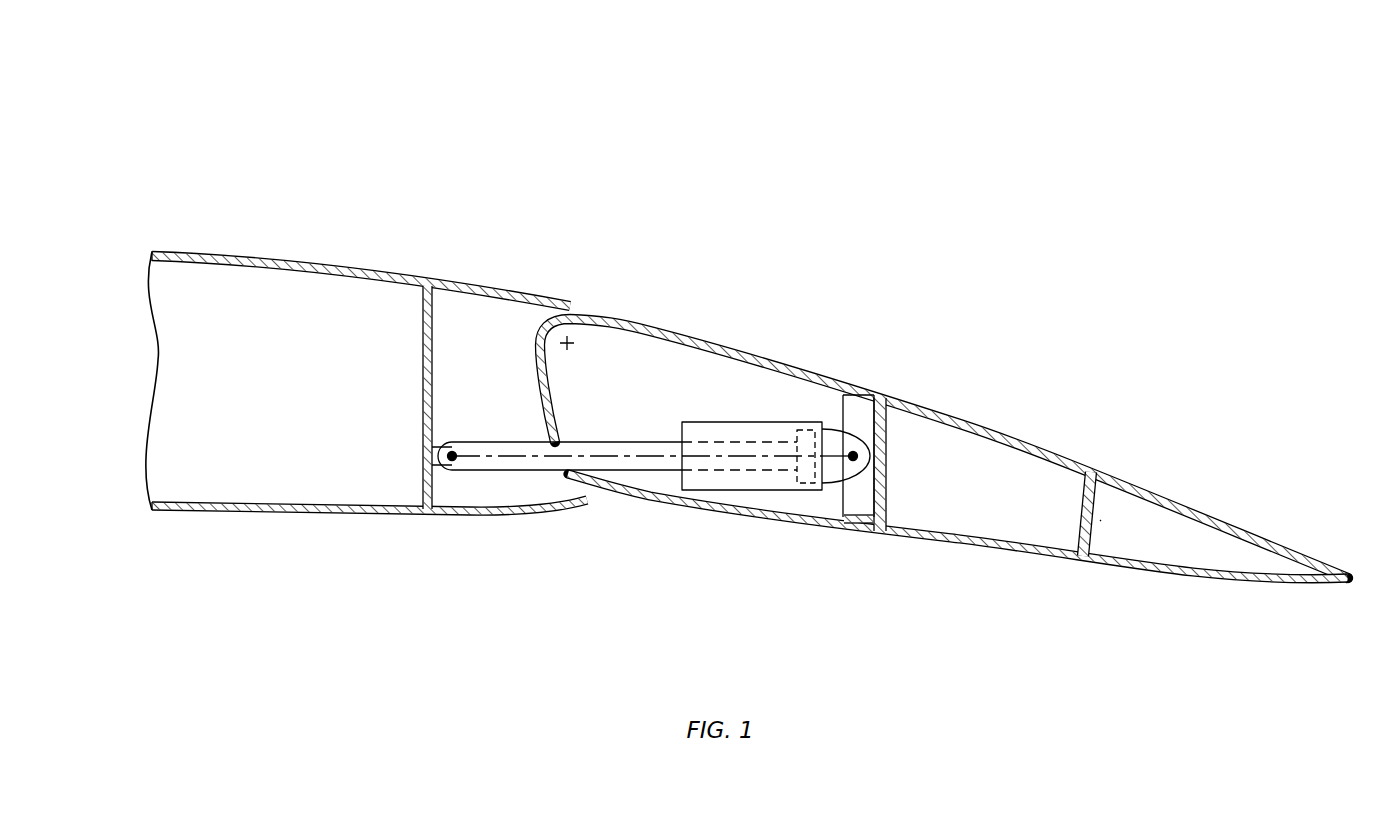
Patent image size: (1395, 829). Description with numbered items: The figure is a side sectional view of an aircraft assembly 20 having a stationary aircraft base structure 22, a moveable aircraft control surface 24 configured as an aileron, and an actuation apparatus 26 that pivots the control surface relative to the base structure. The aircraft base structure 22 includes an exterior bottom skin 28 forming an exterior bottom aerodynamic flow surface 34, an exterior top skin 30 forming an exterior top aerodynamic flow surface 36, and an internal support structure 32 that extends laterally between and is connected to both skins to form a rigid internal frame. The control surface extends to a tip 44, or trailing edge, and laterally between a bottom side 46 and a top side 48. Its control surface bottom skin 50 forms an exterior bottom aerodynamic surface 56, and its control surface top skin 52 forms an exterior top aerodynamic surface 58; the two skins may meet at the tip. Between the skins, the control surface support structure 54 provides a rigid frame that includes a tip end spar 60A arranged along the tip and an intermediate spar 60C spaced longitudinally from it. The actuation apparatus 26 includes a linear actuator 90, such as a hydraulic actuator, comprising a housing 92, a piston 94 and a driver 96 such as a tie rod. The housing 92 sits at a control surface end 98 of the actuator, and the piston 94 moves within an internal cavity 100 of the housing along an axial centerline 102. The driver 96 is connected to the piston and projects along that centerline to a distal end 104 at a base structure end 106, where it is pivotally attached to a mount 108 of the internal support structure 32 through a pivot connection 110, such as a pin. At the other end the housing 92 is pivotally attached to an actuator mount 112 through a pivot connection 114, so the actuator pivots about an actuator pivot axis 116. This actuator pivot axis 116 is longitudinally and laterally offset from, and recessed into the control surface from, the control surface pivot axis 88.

The aircraft assembly 20 is at (197, 127).
The aircraft base structure 22 is at (357, 230).
The aircraft control surface 24 is at (962, 357).
The actuation apparatus 26 is at (963, 496).
The exterior bottom skin 28 is at (203, 512).
The exterior top skin 30 is at (200, 250).
The internal support structure 32 is at (150, 381).
The exterior bottom aerodynamic flow surface 34 is at (332, 543).
The exterior top aerodynamic flow surface 36 is at (328, 234).
The tip 44 is at (1352, 580).
The bottom side 46 is at (958, 564).
The exterior bottom aerodynamic surface 56 is at (958, 564).
The top side 48 is at (944, 448).
The exterior top aerodynamic surface 58 is at (944, 448).
The control surface bottom skin 50 is at (963, 548).
The control surface top skin 52 is at (973, 423).
The control surface support structure 54 is at (1123, 520).
The tip end spar 60A is at (1095, 528).
The intermediate spar 60C is at (933, 421).
The control surface pivot axis 88 is at (570, 340).
The linear actuator 90 is at (750, 400).
The housing 92 is at (720, 433).
The piston 94 is at (812, 483).
The driver 96 is at (630, 504).
The control surface end 98 is at (870, 457).
The internal cavity 100 is at (743, 467).
The axial centerline 102 is at (622, 474).
The distal end 104 is at (389, 471).
The base structure end 106 is at (389, 471).
The mount 108 is at (389, 471).
The pivot connection 110 is at (438, 457).
The actuator mount 112 is at (887, 438).
The pivot connection 114 is at (874, 493).
The actuator pivot axis 116 is at (852, 473).